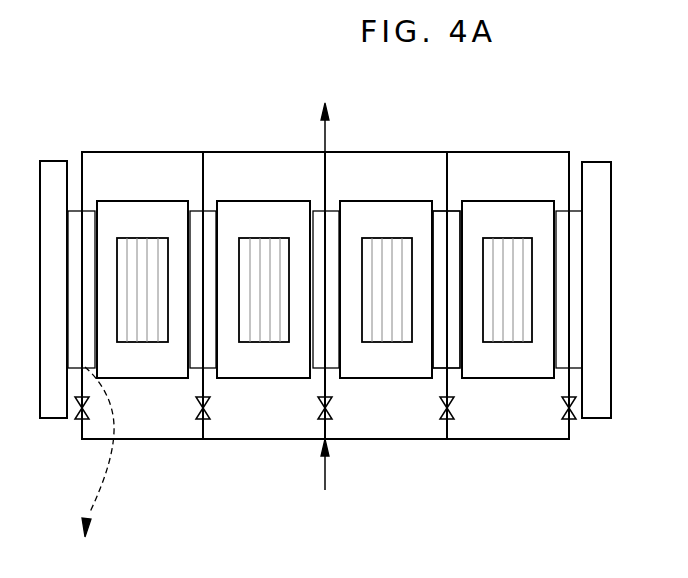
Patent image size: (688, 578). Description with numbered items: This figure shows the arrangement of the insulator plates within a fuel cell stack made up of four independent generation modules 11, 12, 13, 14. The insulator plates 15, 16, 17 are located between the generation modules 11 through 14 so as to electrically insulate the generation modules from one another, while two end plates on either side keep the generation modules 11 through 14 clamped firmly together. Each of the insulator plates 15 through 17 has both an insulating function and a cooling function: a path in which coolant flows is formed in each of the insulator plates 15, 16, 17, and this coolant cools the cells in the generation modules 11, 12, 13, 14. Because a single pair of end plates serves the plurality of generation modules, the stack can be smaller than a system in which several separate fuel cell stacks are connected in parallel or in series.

The generation module 11 is at (140, 365).
The generation module 12 is at (260, 367).
The generation module 13 is at (390, 367).
The generation module 14 is at (505, 367).
The insulator plate 15 is at (212, 211).
The insulator plate 16 is at (334, 211).
The insulator plate 17 is at (455, 211).